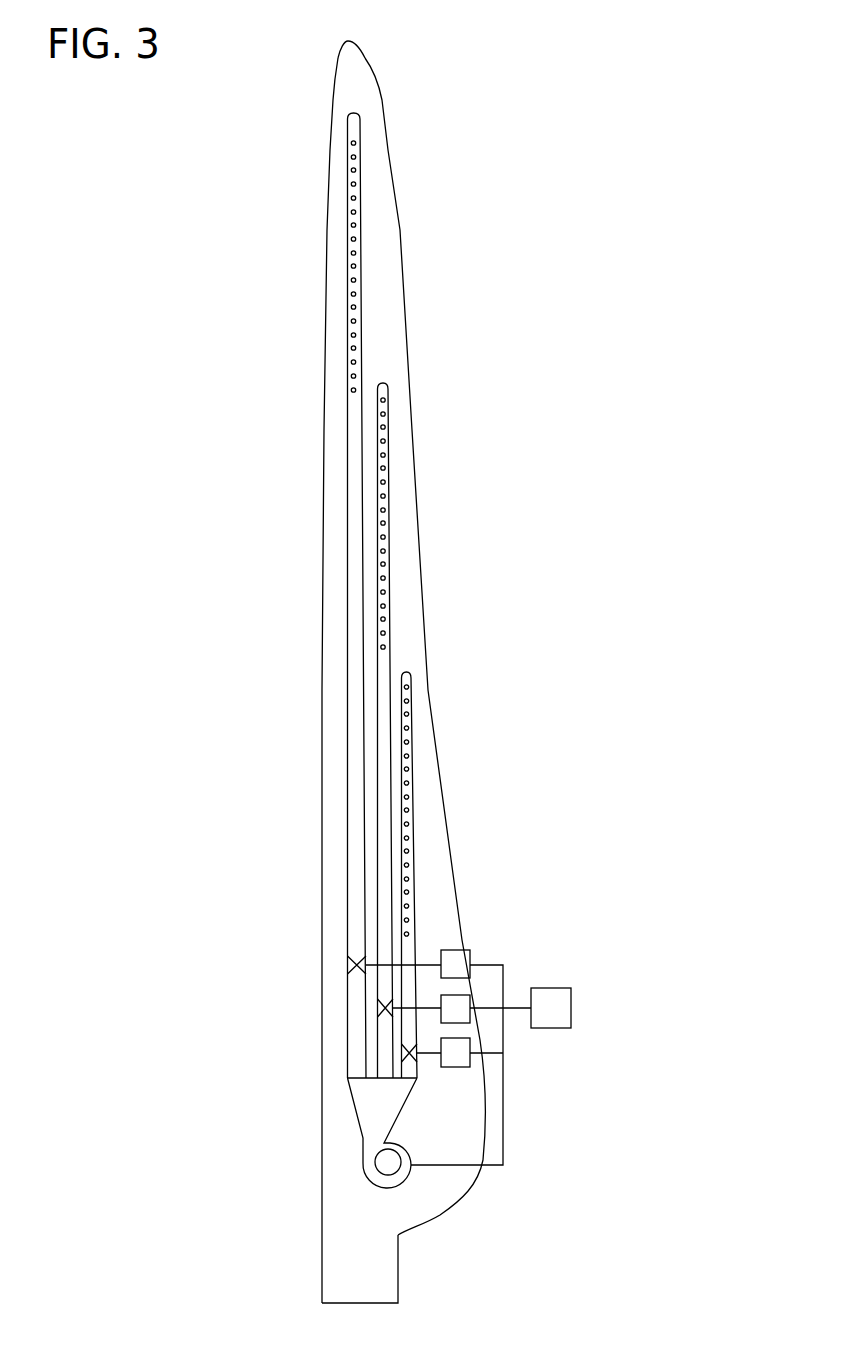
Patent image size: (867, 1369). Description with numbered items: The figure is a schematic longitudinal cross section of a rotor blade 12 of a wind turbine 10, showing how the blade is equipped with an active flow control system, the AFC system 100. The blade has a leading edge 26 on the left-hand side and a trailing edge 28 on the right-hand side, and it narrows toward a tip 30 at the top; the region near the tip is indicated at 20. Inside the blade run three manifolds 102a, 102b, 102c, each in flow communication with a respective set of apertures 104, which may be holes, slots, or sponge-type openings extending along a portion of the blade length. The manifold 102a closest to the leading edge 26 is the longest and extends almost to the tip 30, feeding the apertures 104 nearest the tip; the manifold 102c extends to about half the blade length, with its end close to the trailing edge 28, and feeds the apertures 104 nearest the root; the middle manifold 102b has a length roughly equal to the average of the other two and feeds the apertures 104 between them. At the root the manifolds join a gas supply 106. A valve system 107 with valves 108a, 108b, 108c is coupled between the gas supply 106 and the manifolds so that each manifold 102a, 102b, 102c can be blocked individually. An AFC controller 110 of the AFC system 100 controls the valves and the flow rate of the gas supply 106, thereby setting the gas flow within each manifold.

The wind turbine 10 is at (667, 141).
The rotor blade 12 is at (533, 437).
The blade tip 20 is at (363, 93).
The leading edge 26 is at (323, 628).
The trailing edge 28 is at (418, 595).
The tip 30 is at (346, 42).
The AFC system 100 is at (534, 863).
The manifold 102a is at (346, 524).
The middle manifold 102b is at (377, 768).
The manifold 102c is at (415, 818).
The apertures 104 is at (410, 743).
The gas supply 106 is at (360, 1133).
The valve system 107 is at (625, 961).
The valve 108a is at (468, 950).
The valve 108b is at (470, 1003).
The valve 108c is at (468, 1062).
The AFC controller 110 is at (572, 1005).